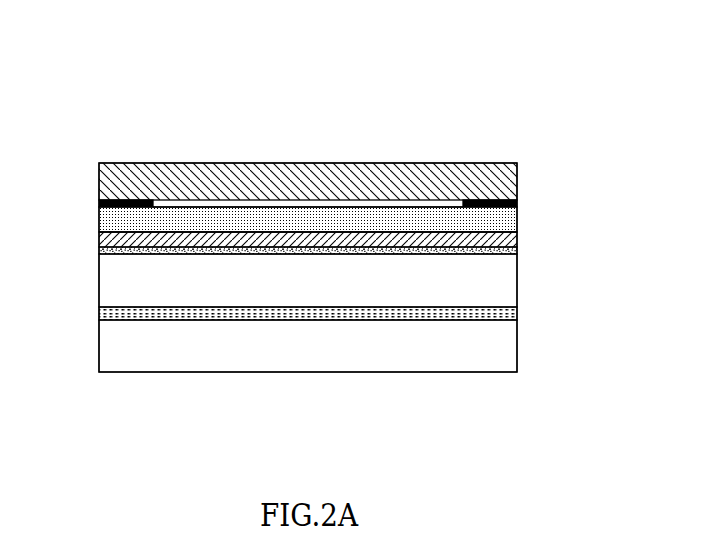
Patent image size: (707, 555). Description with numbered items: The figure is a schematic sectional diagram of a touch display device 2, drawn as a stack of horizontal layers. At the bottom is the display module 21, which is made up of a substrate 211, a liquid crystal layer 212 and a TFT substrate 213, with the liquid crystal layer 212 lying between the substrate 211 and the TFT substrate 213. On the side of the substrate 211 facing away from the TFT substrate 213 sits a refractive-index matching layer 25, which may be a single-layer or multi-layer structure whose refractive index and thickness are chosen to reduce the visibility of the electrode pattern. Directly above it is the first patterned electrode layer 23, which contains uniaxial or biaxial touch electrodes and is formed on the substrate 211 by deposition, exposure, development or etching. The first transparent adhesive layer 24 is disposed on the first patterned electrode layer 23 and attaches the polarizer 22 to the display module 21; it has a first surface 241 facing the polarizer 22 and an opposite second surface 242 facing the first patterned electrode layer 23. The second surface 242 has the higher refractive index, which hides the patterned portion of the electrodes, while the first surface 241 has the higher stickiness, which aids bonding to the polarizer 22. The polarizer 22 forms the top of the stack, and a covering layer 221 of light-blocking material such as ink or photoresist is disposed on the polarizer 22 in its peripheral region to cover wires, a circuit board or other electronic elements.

The touch display device 2 is at (189, 57).
The display module 21 is at (46, 272).
The substrate 211 is at (102, 288).
The liquid crystal layer 212 is at (100, 313).
The TFT substrate 213 is at (102, 350).
The polarizer 22 is at (403, 186).
The covering layer 221 is at (127, 203).
The first patterned electrode layer 23 is at (99, 238).
The first transparent adhesive layer 24 is at (578, 199).
The first surface 241 is at (519, 205).
The second surface 242 is at (519, 234).
The refractive-index matching layer 25 is at (99, 251).